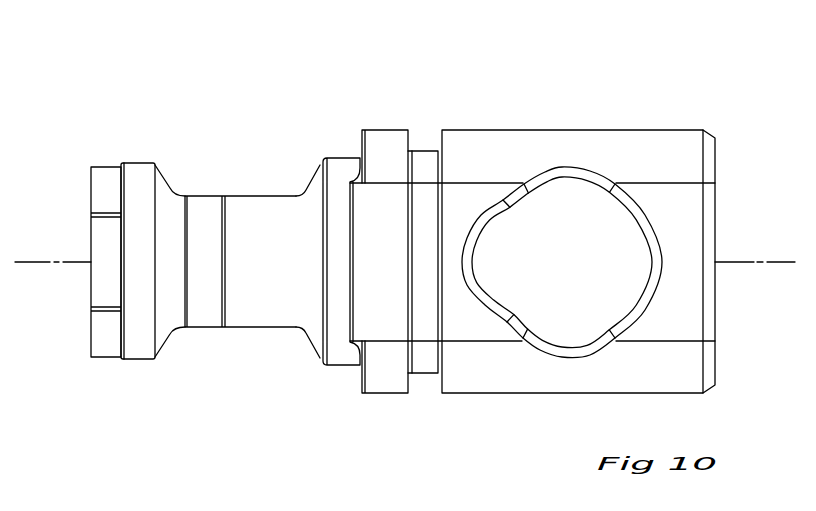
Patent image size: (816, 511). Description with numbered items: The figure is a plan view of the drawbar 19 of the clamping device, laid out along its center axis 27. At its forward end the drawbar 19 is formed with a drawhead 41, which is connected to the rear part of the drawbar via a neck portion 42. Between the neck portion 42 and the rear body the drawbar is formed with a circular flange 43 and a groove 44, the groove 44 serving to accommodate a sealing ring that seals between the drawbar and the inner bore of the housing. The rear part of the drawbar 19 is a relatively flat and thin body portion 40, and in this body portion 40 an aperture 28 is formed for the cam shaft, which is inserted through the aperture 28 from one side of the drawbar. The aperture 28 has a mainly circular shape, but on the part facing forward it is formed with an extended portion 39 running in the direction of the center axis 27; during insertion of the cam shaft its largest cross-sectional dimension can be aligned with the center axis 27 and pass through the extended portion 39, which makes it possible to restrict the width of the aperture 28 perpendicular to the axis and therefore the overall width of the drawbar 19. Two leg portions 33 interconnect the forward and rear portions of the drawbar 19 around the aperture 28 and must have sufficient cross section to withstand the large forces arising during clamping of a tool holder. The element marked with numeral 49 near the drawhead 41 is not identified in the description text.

The drawbar 19 is at (323, 113).
The center axis 27 is at (44, 262).
The aperture 28 is at (607, 230).
The leg portions 33 is at (562, 148).
The extended portion 39 is at (485, 253).
The body portion 40 is at (685, 312).
The drawhead 41 is at (137, 172).
The neck portion 42 is at (255, 212).
The circular flange 43 is at (385, 147).
The groove 44 is at (423, 157).
The conical transition 49 is at (163, 177).